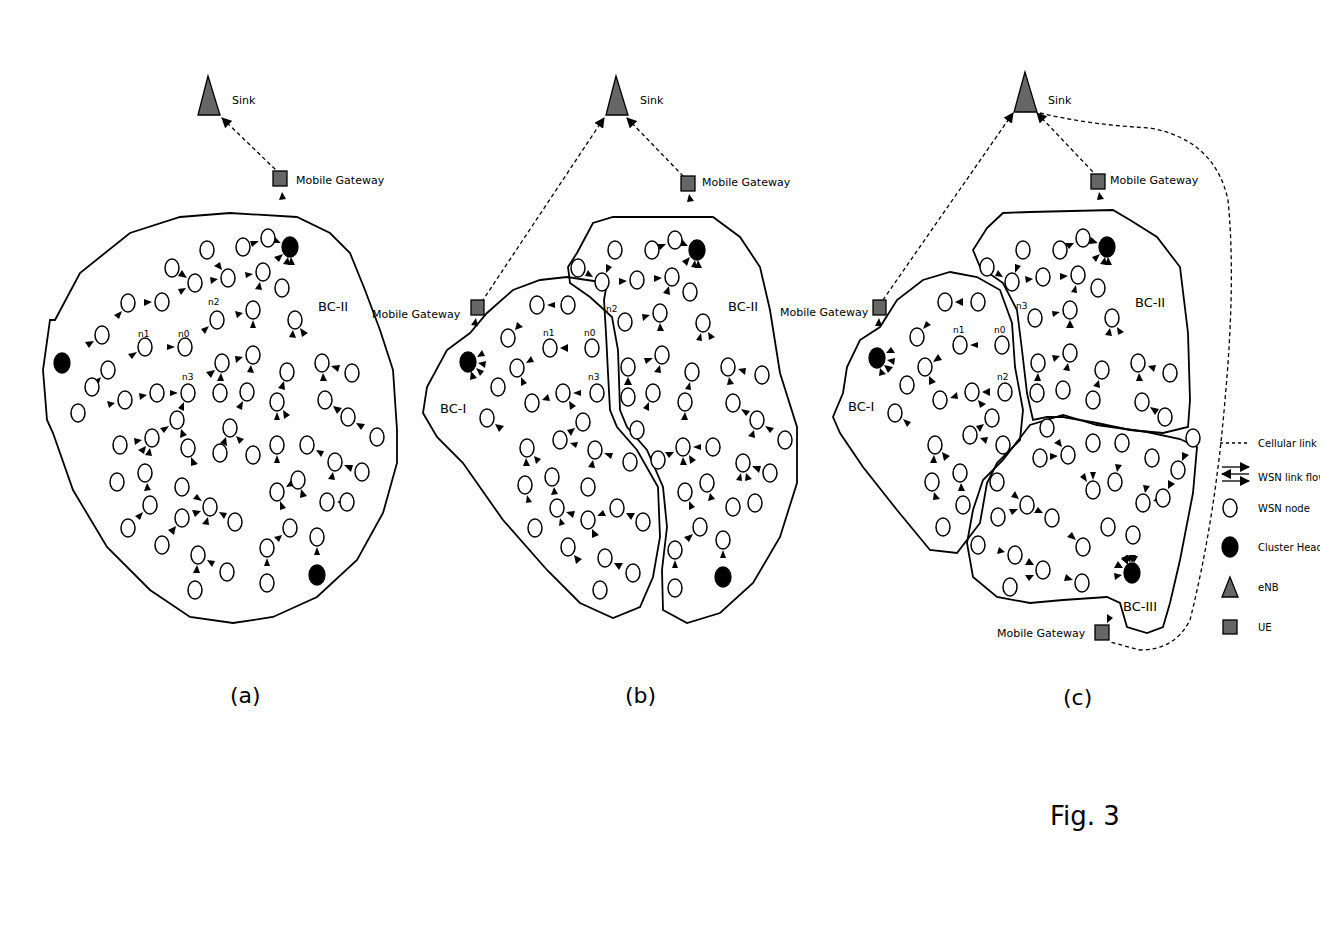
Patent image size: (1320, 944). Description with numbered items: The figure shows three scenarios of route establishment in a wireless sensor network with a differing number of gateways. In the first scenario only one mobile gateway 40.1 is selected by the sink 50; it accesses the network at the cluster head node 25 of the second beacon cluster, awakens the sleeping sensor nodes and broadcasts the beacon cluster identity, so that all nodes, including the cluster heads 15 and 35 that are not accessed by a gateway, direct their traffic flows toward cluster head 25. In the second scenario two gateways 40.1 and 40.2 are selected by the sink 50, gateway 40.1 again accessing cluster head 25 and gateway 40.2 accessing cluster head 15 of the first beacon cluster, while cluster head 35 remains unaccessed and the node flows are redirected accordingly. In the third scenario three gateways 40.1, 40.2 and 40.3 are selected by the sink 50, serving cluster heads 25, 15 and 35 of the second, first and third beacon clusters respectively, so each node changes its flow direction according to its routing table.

In FIG. 3a, the cluster head node 15 is at (60, 358).
In FIG. 3b, the cluster head node 15 is at (466, 372).
In FIG. 3c, the cluster head node 15 is at (875, 368).
In FIG. 3a, the cluster head node 25 is at (298, 247).
In FIG. 3b, the cluster head node 25 is at (705, 249).
In FIG. 3c, the cluster head node 25 is at (1115, 248).
In FIG. 3a, the cluster head node 35 is at (320, 585).
In FIG. 3b, the cluster head node 35 is at (726, 586).
In FIG. 3c, the cluster head node 35 is at (1139, 580).
In FIG. 3a, the mobile gateway 40.1 is at (287, 168).
In FIG. 3b, the mobile gateway 40.1 is at (697, 173).
In FIG. 3c, the mobile gateway 40.1 is at (1105, 170).
In FIG. 3b, the mobile gateway 40.2 is at (476, 300).
In FIG. 3c, the mobile gateway 40.2 is at (880, 298).
In FIG. 3c, the mobile gateway 40.3 is at (1093, 640).
In FIG. 3a, the sink 50 is at (205, 88).
In FIG. 3b, the sink 50 is at (613, 82).
In FIG. 3c, the sink 50 is at (1015, 80).